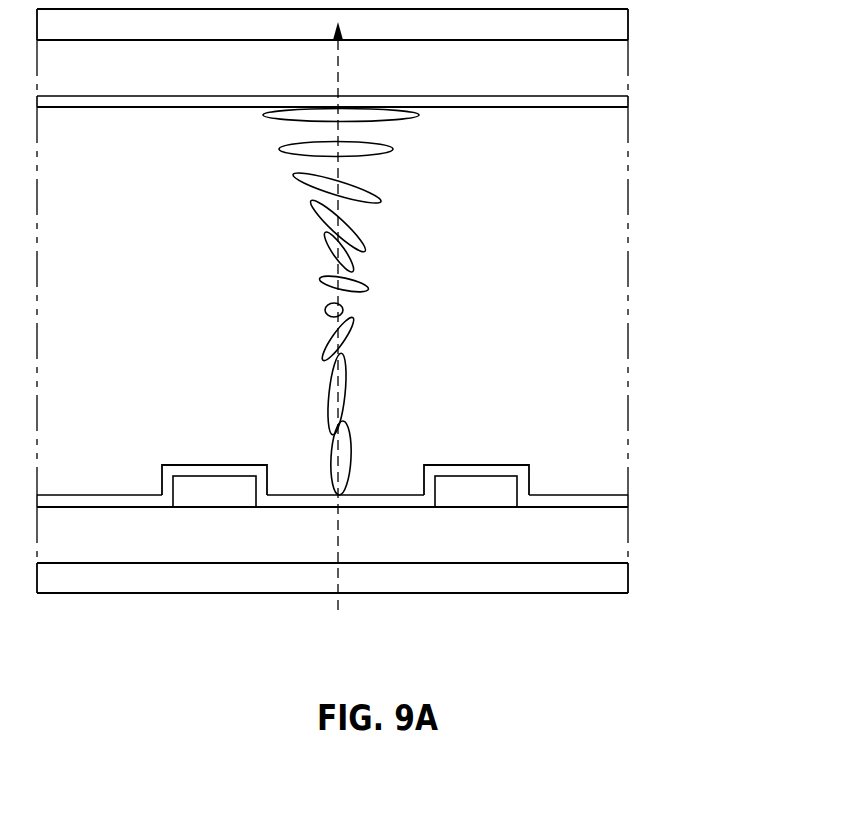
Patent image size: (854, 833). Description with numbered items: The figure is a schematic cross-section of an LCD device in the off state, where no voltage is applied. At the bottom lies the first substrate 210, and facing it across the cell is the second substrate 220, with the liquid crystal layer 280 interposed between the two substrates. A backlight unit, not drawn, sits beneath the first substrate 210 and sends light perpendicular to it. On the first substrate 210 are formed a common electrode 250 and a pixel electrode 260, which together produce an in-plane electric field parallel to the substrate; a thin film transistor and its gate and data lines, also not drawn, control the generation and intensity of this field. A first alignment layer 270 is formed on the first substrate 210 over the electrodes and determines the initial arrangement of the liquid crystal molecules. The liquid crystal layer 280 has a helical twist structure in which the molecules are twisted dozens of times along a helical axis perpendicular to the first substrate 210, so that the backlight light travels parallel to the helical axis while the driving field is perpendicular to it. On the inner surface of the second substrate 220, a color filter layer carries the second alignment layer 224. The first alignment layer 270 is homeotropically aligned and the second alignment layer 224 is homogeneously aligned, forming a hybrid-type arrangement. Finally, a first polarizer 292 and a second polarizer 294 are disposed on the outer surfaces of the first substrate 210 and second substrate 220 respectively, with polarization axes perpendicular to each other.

The second polarizer 294 is at (618, 27).
The second substrate 220 is at (616, 83).
The second alignment layer 224 is at (618, 102).
The liquid crystal layer 280 is at (615, 199).
The first alignment layer 270 is at (610, 500).
The first substrate 210 is at (613, 552).
The first polarizer 292 is at (615, 577).
The common electrode 250 is at (218, 493).
The pixel electrode 260 is at (478, 493).